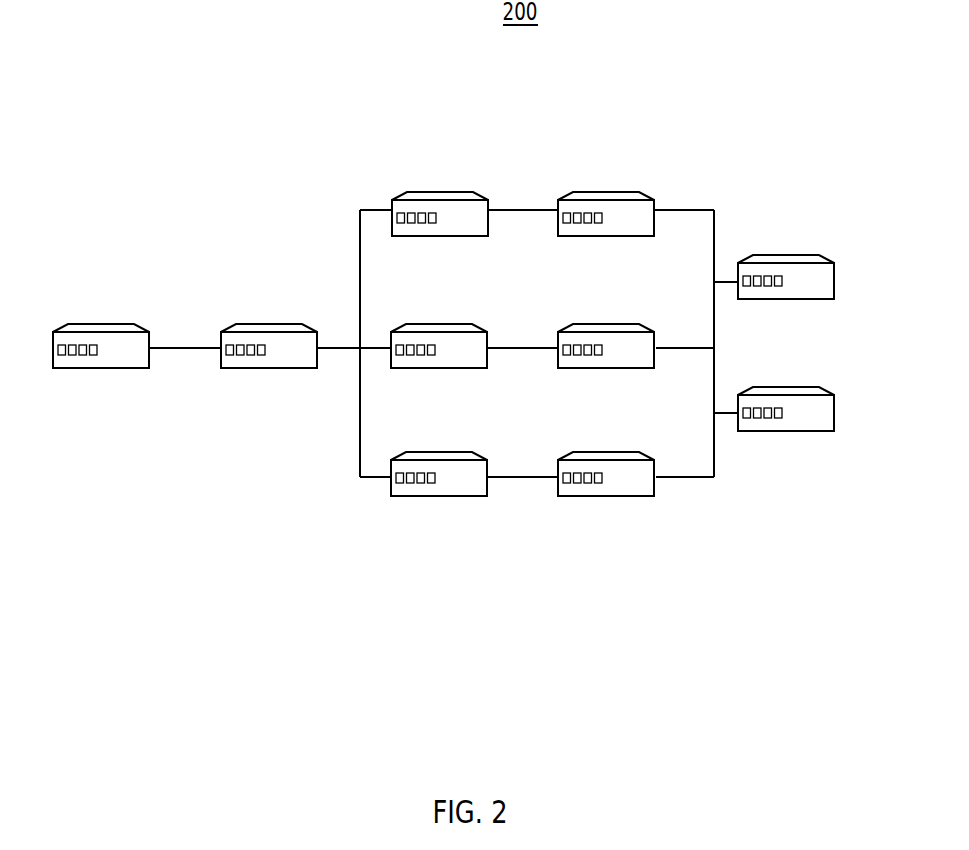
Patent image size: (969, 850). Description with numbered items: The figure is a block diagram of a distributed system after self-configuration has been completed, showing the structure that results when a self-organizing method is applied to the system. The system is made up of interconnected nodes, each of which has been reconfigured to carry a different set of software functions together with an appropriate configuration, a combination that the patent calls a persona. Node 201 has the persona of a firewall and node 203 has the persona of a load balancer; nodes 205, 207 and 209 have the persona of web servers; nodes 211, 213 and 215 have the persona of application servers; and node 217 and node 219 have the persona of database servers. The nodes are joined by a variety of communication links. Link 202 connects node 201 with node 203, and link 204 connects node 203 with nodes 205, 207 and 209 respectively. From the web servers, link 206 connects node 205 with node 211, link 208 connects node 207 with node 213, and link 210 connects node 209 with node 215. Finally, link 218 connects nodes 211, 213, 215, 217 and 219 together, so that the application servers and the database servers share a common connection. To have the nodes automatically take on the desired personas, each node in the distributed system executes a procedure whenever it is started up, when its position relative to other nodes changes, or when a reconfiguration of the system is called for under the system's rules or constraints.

The node 201 is at (90, 325).
The link 202 is at (183, 348).
The node 203 is at (288, 325).
The link 204 is at (342, 350).
The node 205 is at (457, 190).
The link 206 is at (547, 208).
The node 207 is at (448, 323).
The link 208 is at (503, 348).
The node 209 is at (425, 452).
The link 210 is at (535, 477).
The node 211 is at (623, 192).
The node 213 is at (602, 322).
The node 215 is at (637, 495).
The node 217 is at (778, 255).
The link 218 is at (715, 235).
The node 219 is at (778, 387).